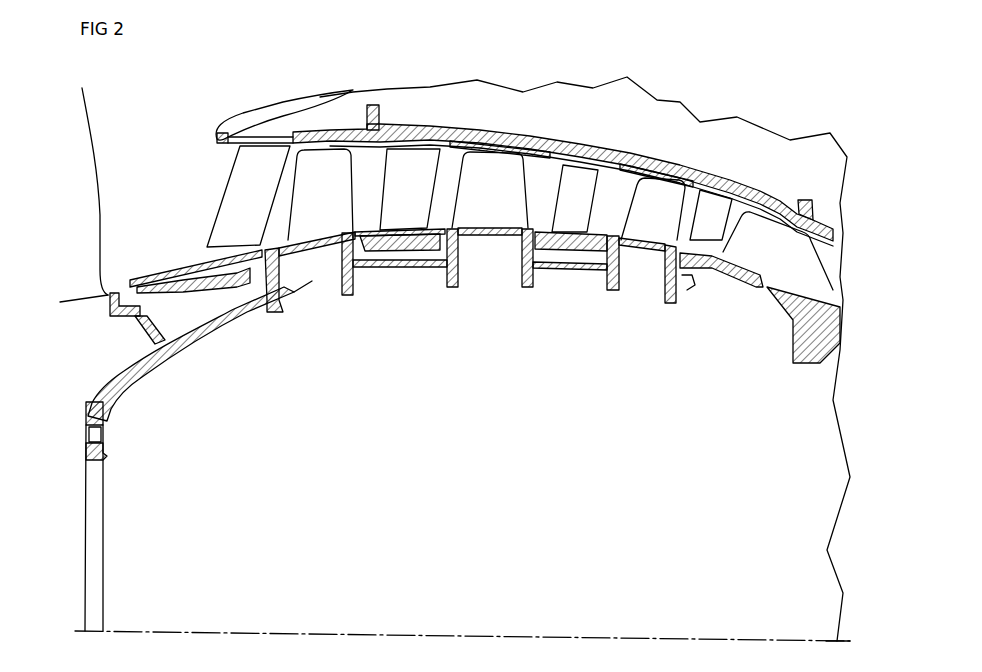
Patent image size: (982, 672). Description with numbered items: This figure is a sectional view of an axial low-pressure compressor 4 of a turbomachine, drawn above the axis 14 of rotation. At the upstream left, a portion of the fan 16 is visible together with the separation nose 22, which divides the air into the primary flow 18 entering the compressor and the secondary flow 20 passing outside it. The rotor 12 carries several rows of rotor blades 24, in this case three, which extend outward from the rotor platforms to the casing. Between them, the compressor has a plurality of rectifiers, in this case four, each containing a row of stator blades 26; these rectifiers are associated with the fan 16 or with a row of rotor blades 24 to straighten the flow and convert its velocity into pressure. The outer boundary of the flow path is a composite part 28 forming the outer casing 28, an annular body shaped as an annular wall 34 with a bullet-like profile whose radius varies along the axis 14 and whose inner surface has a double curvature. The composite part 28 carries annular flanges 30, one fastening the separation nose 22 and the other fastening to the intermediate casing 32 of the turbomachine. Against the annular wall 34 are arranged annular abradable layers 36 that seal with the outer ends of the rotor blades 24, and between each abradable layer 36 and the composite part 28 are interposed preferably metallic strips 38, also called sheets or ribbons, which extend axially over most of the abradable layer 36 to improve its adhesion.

The low-pressure compressor 4 is at (749, 107).
The rotor 12 is at (104, 413).
The axis of rotation 14 is at (638, 639).
The fan 16 is at (86, 204).
The primary flow 18 is at (185, 207).
The secondary flow 20 is at (200, 101).
The separation nose 22 is at (217, 139).
The rotor blades 24 is at (313, 220).
The stator blades 26 is at (233, 227).
The composite part (outer casing) 28 is at (580, 114).
The annular flanges 30 is at (372, 105).
The intermediate casing 32 is at (802, 365).
The annular wall 34 is at (611, 155).
The abradable layers 36 is at (544, 157).
The strips (sheets, ribbons) 38 is at (508, 140).